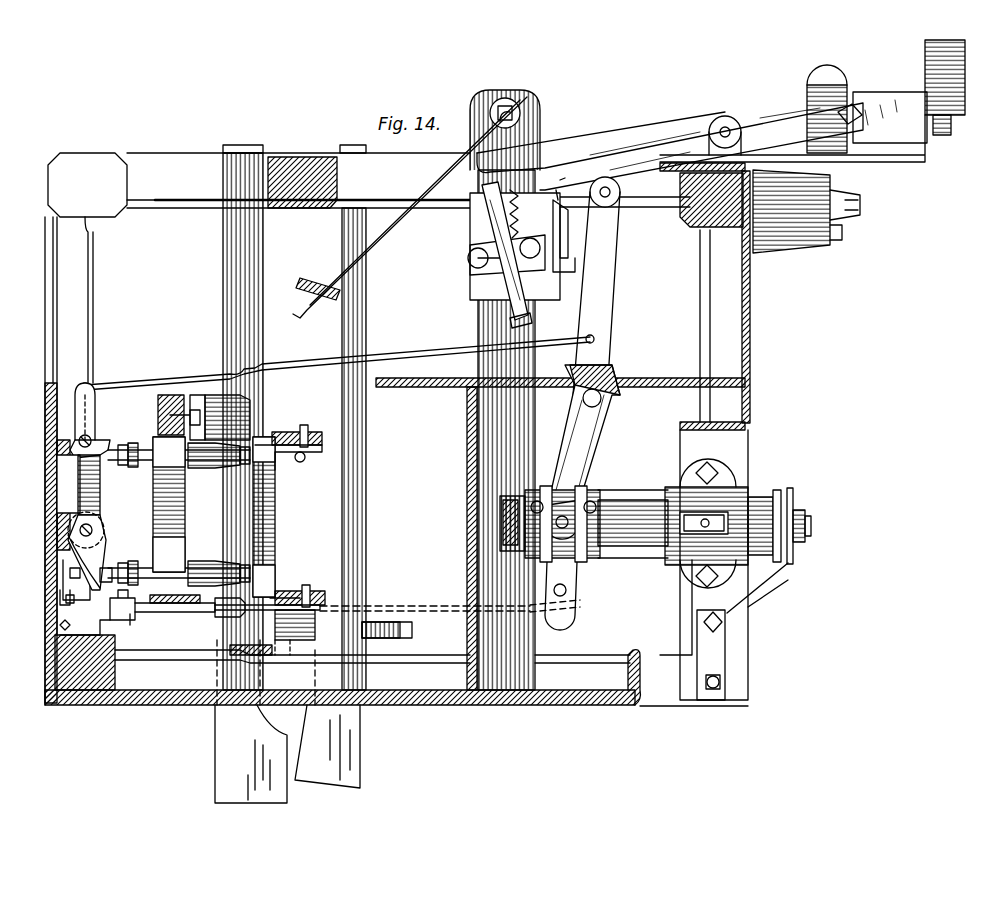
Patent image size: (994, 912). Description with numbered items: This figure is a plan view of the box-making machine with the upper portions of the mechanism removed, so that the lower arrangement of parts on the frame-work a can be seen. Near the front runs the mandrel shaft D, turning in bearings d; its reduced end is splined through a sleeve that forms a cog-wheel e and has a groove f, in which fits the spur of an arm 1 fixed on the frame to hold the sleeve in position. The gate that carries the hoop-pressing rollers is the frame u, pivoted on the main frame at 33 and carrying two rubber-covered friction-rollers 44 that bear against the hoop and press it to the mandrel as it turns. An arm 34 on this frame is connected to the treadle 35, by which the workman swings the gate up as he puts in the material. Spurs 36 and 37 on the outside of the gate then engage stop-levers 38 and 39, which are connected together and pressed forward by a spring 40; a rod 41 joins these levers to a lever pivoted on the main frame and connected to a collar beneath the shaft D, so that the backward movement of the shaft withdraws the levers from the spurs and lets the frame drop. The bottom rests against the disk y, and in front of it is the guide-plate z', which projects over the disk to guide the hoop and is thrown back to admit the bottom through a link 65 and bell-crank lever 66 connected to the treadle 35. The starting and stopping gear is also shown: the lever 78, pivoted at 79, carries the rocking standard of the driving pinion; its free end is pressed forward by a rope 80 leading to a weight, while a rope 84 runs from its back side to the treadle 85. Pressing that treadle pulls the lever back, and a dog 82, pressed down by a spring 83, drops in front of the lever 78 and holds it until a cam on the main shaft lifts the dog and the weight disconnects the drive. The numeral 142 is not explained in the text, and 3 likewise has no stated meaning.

The frame-work a is at (487, 527).
The arm 1 is at (770, 582).
The slide block 3 is at (128, 620).
The pivot 33 is at (305, 432).
The arm 34 is at (392, 640).
The treadle 35 is at (327, 719).
The spur 36 is at (108, 462).
The spur 37 is at (112, 570).
The stop-lever 38 is at (88, 405).
The stop-lever 39 is at (104, 512).
The spring 40 is at (60, 556).
The rod 41 is at (388, 355).
The rubber-covered friction-rollers 44 is at (216, 470).
The link 65 is at (196, 614).
The bell-crank lever 66 is at (152, 612).
The lever 78 is at (782, 128).
The pivot 79 is at (725, 121).
The rope 80 is at (569, 223).
The dog 82 is at (480, 225).
The spring 83 is at (513, 255).
The rope 84 is at (404, 215).
The treadle 85 is at (251, 721).
The arm 142 is at (600, 305).
The frame u is at (272, 528).
The disk y is at (598, 447).
The guide-plate z' is at (175, 604).
The shaft D is at (638, 520).
The bearings d is at (706, 526).
The cog-wheel e is at (762, 500).
The groove f is at (795, 508).